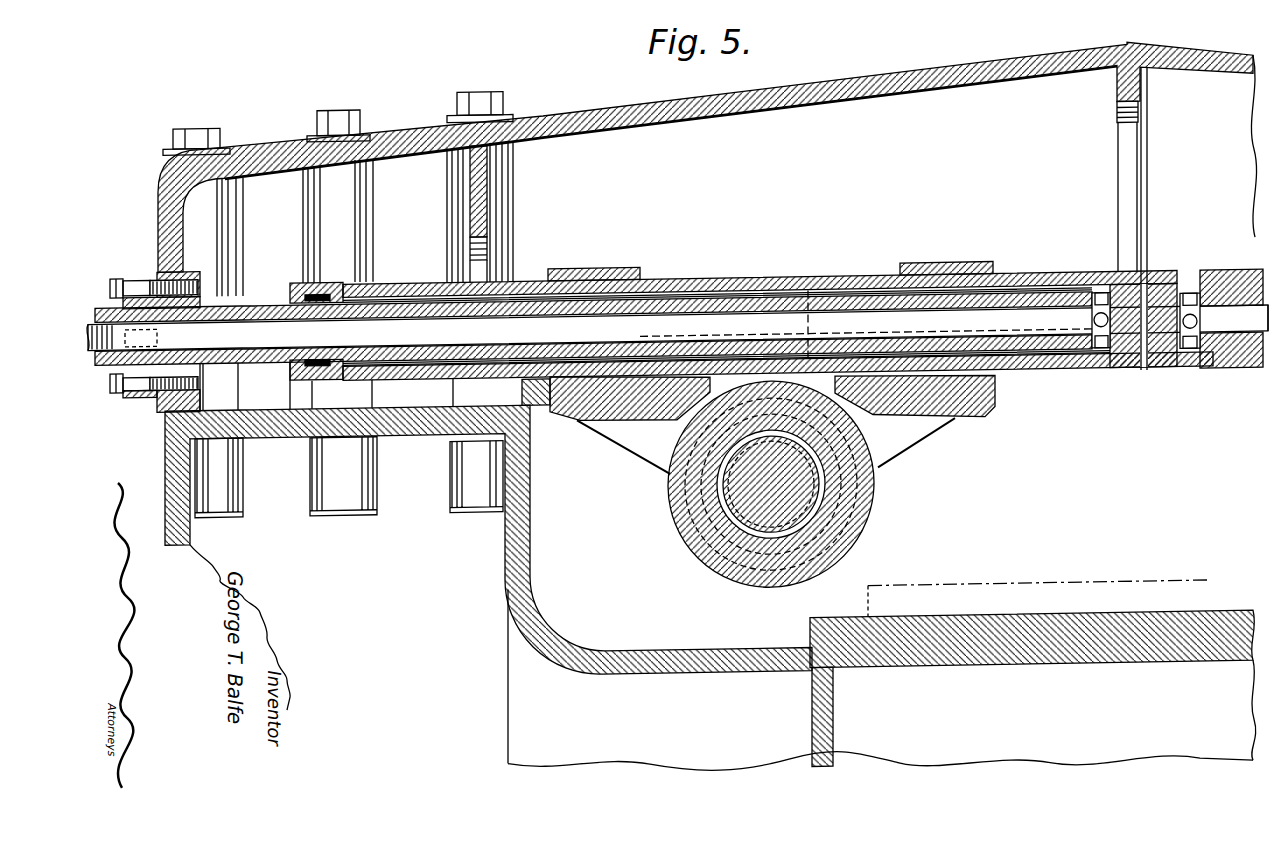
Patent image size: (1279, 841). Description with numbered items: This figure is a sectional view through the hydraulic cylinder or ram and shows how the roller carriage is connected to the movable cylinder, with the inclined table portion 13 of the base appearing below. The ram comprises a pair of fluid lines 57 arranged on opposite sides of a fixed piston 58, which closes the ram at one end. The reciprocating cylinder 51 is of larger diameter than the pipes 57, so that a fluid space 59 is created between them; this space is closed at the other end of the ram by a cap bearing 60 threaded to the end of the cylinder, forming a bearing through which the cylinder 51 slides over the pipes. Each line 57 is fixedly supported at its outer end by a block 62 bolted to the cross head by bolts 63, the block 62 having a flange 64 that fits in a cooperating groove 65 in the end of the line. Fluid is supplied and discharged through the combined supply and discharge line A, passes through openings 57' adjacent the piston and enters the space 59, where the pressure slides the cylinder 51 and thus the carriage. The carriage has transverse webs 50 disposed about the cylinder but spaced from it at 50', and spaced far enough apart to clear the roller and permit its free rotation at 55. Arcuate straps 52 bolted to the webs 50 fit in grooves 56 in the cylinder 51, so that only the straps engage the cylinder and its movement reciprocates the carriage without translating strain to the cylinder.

The combined supply and discharge line A is at (88, 323).
The table portion 13 is at (948, 653).
The transverse web 50 is at (915, 428).
The spacing between web and cylinder 50' is at (628, 425).
The reciprocating cylinder 51 is at (729, 289).
The strap or cap member 52 is at (938, 281).
The roller clearance 55 is at (750, 390).
The groove 56 is at (645, 286).
The fluid line 57 is at (734, 341).
The opening 57' is at (1135, 343).
The fixed piston 58 is at (1142, 378).
The fluid space 59 is at (767, 308).
The cap bearing 60 is at (330, 288).
The block 62 is at (136, 401).
The bolt 63 is at (118, 389).
The flange 64 is at (150, 399).
The groove 65 is at (153, 281).